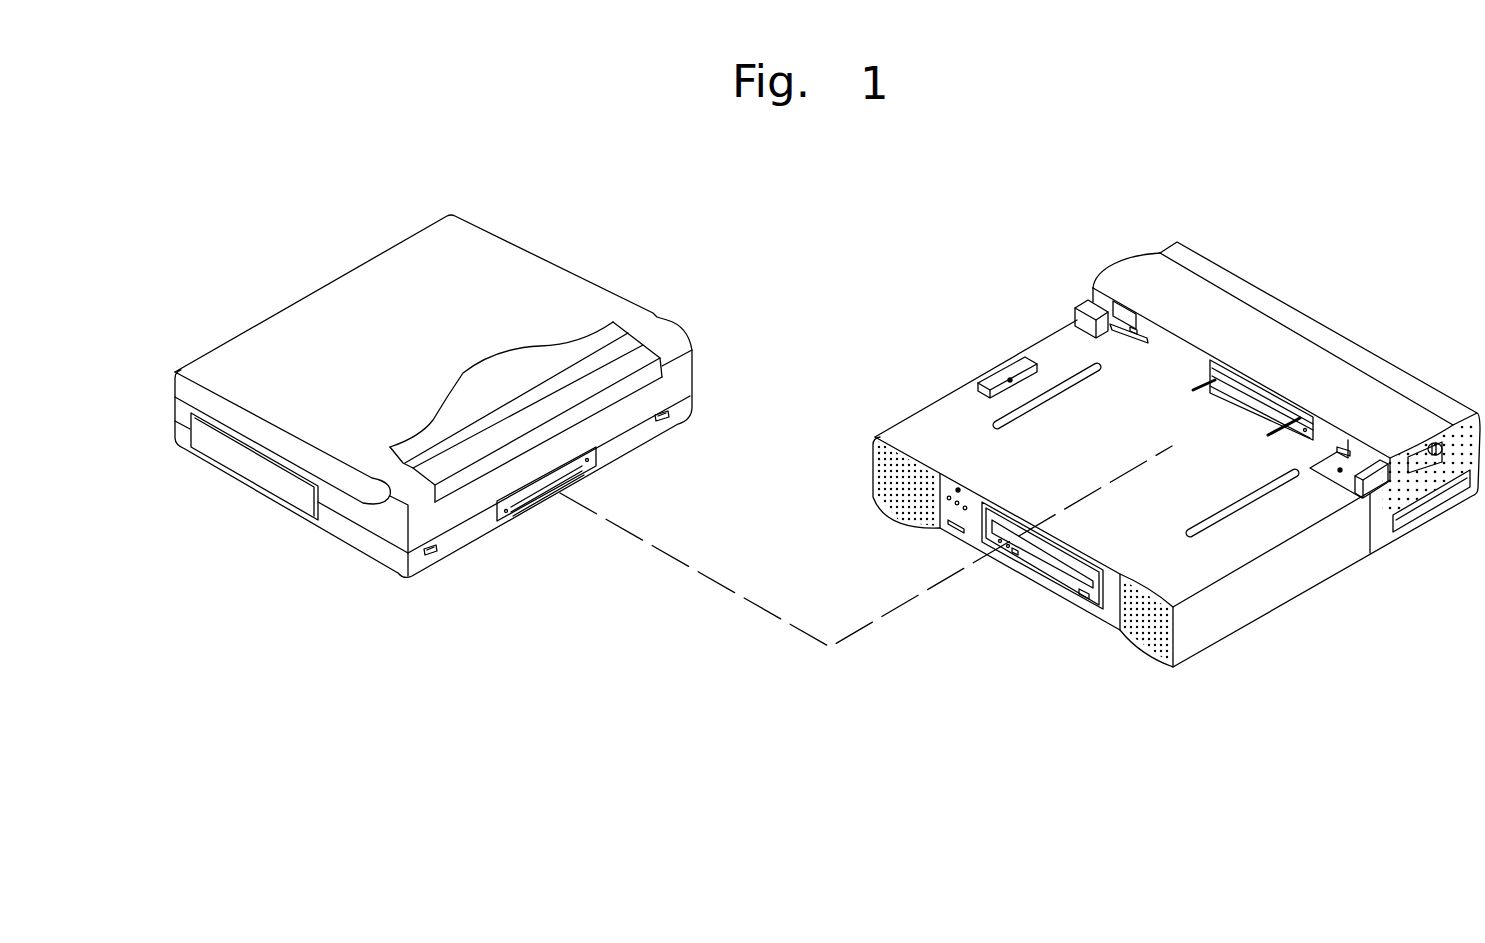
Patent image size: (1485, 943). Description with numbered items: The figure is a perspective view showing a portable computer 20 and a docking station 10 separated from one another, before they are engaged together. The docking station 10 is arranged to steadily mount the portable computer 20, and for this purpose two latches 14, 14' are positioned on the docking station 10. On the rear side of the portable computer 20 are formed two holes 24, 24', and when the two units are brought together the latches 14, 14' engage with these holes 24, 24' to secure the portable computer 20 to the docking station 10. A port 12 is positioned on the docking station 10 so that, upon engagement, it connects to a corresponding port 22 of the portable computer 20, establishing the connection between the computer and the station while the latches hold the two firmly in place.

The docking station 10 is at (1024, 321).
The port 12 is at (1245, 393).
The latch 14 is at (1120, 305).
The latch 14' is at (1349, 445).
The portable computer 20 is at (310, 239).
The port 22 is at (538, 493).
The hole 24 is at (686, 447).
The hole 24' is at (460, 582).